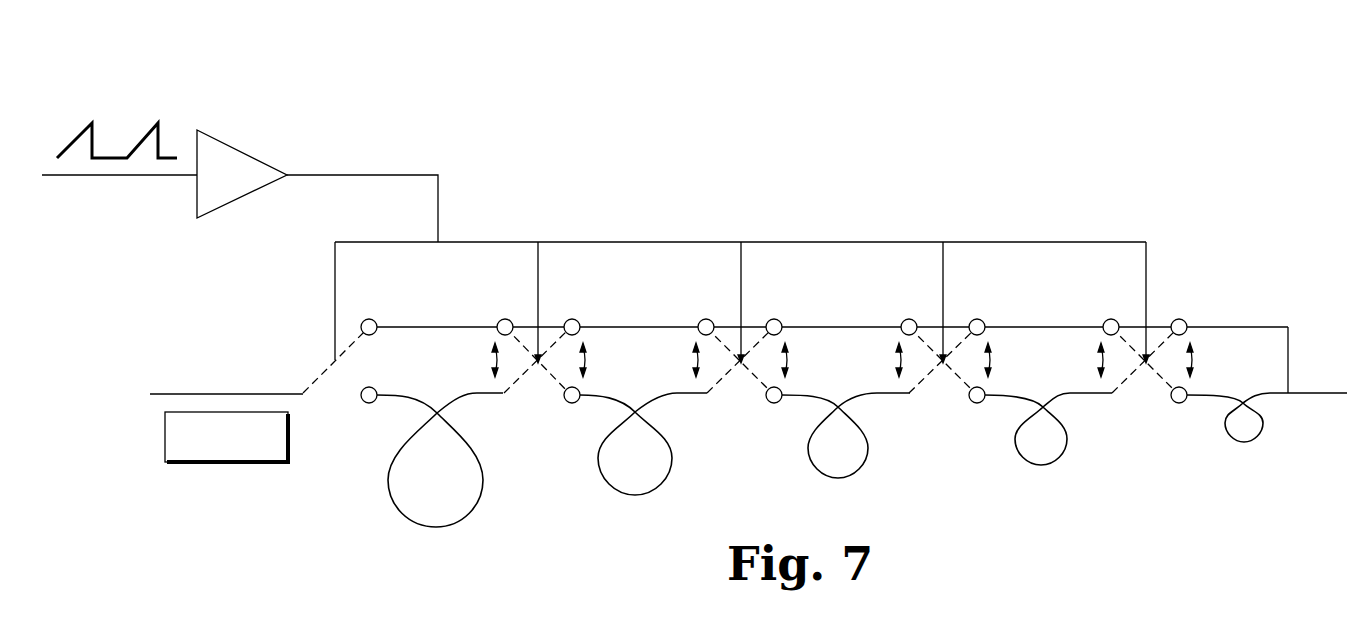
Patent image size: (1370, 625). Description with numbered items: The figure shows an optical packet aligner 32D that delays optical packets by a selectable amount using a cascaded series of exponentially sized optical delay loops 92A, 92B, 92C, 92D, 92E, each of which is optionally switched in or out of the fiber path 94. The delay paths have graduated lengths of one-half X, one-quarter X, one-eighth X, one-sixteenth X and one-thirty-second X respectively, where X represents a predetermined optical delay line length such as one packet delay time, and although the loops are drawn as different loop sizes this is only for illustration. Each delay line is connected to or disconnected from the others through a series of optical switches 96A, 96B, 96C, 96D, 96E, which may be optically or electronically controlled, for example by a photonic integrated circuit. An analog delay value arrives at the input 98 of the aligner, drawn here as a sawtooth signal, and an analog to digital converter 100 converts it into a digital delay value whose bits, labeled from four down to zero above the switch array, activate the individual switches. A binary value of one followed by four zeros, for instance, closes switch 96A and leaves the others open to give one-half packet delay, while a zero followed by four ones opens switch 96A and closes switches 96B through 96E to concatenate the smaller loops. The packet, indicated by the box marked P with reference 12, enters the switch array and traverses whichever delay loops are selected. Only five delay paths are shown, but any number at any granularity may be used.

The processor 12 is at (224, 465).
The optical packet aligner 32D is at (1142, 159).
The optical delay loop 92A is at (483, 478).
The optical delay loop 92B is at (672, 455).
The optical delay loop 92C is at (868, 447).
The optical delay loop 92D is at (1067, 437).
The optical delay loop 92E is at (1263, 427).
The fiber path 94 is at (842, 325).
The optical switch 96A is at (355, 342).
The optical switch 96B is at (556, 343).
The optical switch 96C is at (758, 343).
The optical switch 96D is at (960, 343).
The optical switch 96E is at (1163, 343).
The input 98 is at (118, 180).
The Analog to Digital Converter 100 is at (243, 150).